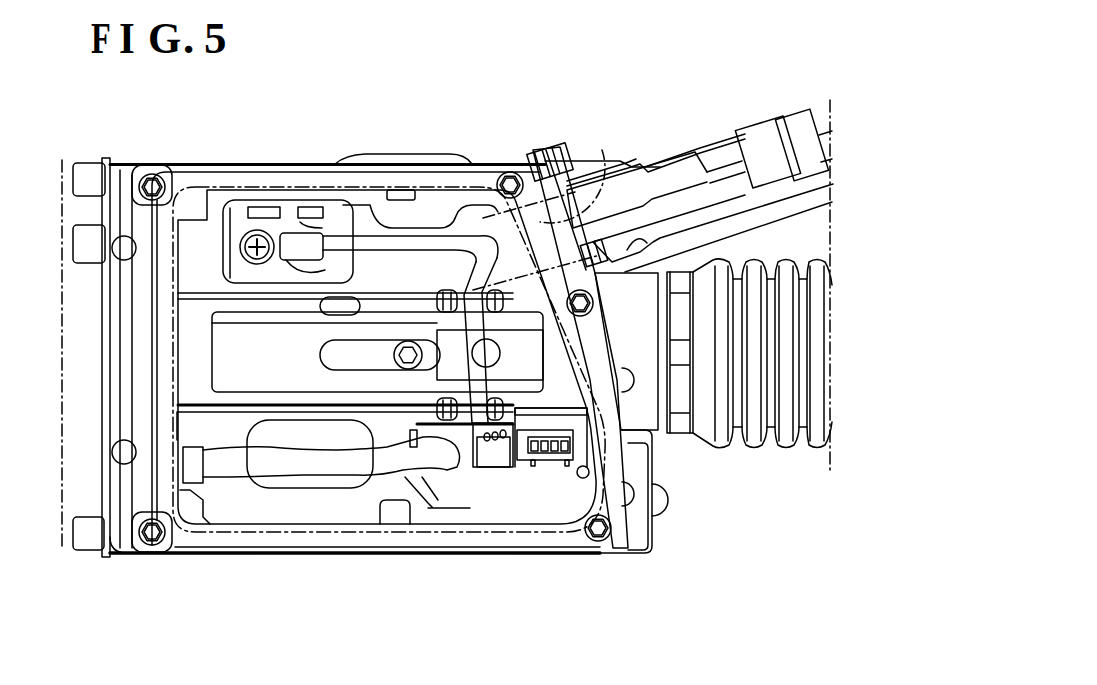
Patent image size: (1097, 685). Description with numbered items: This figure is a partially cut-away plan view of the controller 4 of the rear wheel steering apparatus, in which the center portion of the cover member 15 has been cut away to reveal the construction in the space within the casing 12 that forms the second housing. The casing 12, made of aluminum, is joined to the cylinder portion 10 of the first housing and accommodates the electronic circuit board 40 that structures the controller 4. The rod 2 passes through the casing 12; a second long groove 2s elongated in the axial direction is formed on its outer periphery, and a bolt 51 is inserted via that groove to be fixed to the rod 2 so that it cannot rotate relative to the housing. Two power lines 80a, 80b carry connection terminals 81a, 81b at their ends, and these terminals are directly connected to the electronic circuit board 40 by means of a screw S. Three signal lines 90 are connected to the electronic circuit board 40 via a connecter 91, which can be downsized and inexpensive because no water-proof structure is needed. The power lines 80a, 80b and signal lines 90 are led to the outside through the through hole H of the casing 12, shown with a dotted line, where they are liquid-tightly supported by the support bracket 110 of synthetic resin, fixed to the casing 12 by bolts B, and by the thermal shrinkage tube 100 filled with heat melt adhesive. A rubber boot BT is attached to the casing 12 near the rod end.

The cylinder portion 10 is at (76, 207).
The casing 12 is at (137, 167).
The controller 4 is at (223, 206).
The screw S is at (255, 232).
The connection terminal 81a is at (277, 247).
The connection terminal 81b is at (352, 222).
The power line 80a is at (422, 237).
The power line 80b is at (450, 247).
The cover member 15 is at (483, 172).
The support bracket 110 is at (546, 155).
The bolt B is at (560, 148).
The through hole H is at (590, 190).
The thermal shrinkage tube 100 is at (667, 173).
The signal line 90 is at (477, 417).
The rubber boot BT is at (720, 443).
The rod 2 is at (252, 358).
The second long groove 2s is at (353, 368).
The bolt 51 is at (407, 362).
The connecter 91 is at (497, 457).
The electronic circuit board 40 is at (580, 490).